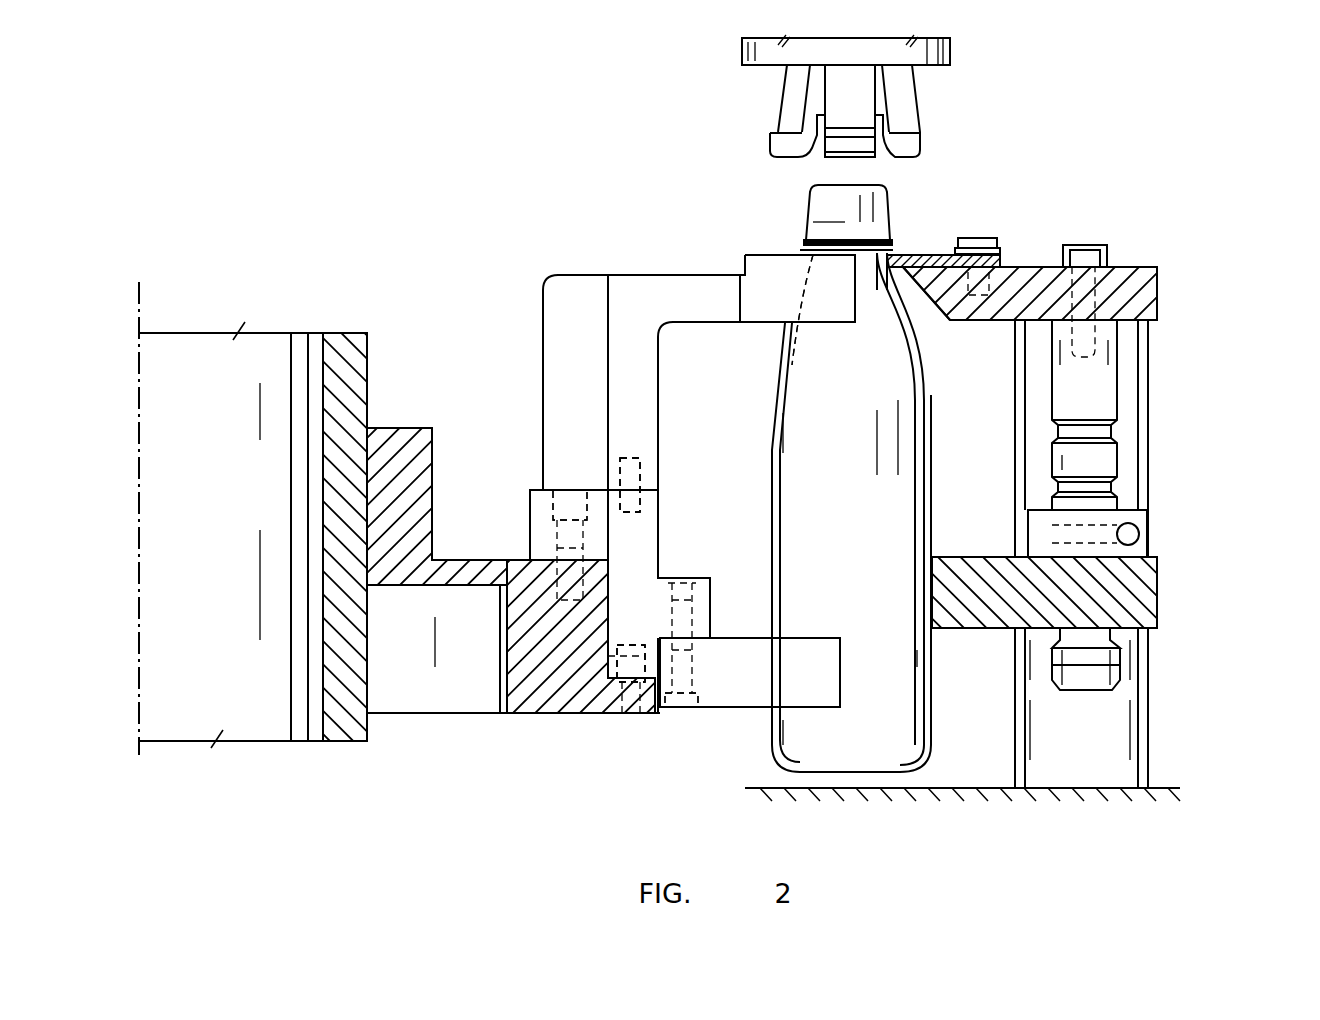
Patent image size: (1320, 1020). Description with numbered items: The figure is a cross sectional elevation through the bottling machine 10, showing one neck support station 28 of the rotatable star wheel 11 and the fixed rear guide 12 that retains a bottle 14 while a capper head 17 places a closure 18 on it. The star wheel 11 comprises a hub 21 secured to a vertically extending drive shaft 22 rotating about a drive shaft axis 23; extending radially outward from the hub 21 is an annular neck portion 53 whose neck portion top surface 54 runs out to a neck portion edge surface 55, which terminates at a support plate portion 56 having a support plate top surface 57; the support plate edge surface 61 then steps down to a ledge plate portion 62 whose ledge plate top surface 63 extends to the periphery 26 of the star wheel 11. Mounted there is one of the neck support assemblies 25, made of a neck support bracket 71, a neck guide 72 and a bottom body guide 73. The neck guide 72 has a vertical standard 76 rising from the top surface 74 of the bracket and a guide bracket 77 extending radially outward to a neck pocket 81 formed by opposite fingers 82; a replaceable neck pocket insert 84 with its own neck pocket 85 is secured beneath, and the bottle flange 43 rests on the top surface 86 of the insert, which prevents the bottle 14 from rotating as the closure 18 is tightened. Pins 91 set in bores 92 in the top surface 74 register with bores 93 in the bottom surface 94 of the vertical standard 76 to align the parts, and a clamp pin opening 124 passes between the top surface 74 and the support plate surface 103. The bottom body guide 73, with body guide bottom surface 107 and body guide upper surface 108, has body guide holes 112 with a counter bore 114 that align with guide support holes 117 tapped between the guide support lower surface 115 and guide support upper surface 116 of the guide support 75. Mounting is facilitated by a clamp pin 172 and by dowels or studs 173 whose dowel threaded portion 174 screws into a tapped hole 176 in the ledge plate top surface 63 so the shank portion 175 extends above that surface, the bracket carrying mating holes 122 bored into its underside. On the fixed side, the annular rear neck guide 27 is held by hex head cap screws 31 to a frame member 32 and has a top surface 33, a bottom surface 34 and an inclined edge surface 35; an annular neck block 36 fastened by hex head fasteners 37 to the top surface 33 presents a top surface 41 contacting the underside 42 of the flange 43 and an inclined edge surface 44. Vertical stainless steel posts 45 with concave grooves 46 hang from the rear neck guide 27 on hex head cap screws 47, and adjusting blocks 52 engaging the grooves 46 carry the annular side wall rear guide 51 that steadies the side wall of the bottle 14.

The bottling machine 10 is at (1235, 93).
The rotatable star wheel 11 is at (462, 743).
The fixed rear guide 12 is at (1162, 260).
The bottle 14 is at (932, 525).
The capper head 17 is at (910, 85).
The closure 18 is at (817, 198).
The hub 21 is at (345, 728).
The drive shaft 22 is at (258, 727).
The drive shaft axis 23 is at (139, 292).
The neck support assembly 25 is at (590, 270).
The periphery 26 is at (668, 715).
The annular rear neck guide 27 is at (1122, 264).
The neck support station 28 is at (517, 377).
The hex head cap screws 31 is at (1103, 263).
The frame member 32 is at (1147, 418).
The top surface 33 is at (1021, 265).
The bottom surface 34 is at (1000, 320).
The inclined edge surface 35 is at (932, 305).
The annular neck block 36 is at (926, 251).
The hex head fasteners 37 is at (977, 240).
The top surface 41 is at (900, 262).
The underside 42 is at (865, 253).
The flange 43 is at (807, 243).
The inclined edge surface 44 is at (880, 300).
The vertical stainless steel posts 45 is at (1122, 390).
The concave grooves 46 is at (1113, 487).
The hex head cap screws 47 is at (1080, 243).
The annular side wall rear guide 51 is at (1160, 600).
The adjusting blocks 52 is at (1148, 530).
The annular neck portion 53 is at (388, 425).
The neck portion top surface 54 is at (410, 425).
The neck portion edge surface 55 is at (432, 448).
The support plate portion 56 is at (473, 560).
The support plate top surface 57 is at (448, 560).
The support plate edge surface 61 is at (610, 600).
The ledge plate portion 62 is at (620, 718).
The ledge plate top surface 63 is at (652, 677).
The neck support bracket 71 is at (660, 509).
The neck guide 72 is at (660, 361).
The bottom body guide 73 is at (842, 673).
The top surface 74 is at (560, 492).
The guide support 75 is at (714, 592).
The vertical standard 76 is at (553, 318).
The guide bracket 77 is at (665, 278).
The neck pocket 81 is at (797, 324).
The fingers 82 is at (835, 312).
The replaceable neck pocket insert 84 is at (747, 253).
The neck pocket 85 is at (827, 257).
The top surface 86 is at (785, 250).
The pins 91 is at (637, 476).
The bores 92 is at (640, 498).
The bores 93 is at (630, 462).
The bottom surface 94 is at (548, 518).
The support plate surface 103 is at (503, 592).
The body guide bottom surface 107 is at (825, 707).
The body guide upper surface 108 is at (818, 637).
The body guide holes 112 is at (693, 660).
The counter bore 114 is at (700, 710).
The guide support lower surface 115 is at (708, 643).
The guide support upper surface 116 is at (716, 590).
The guide support holes 117 is at (700, 617).
The ledge plate or mating holes 122 is at (612, 678).
The clamp pin opening 124 is at (660, 541).
The clamp pin 172 is at (575, 490).
The dowels or studs 173 is at (612, 653).
The dowel threaded portion 174 is at (632, 718).
The shank portion 175 is at (578, 636).
The tapped hole 176 is at (602, 712).